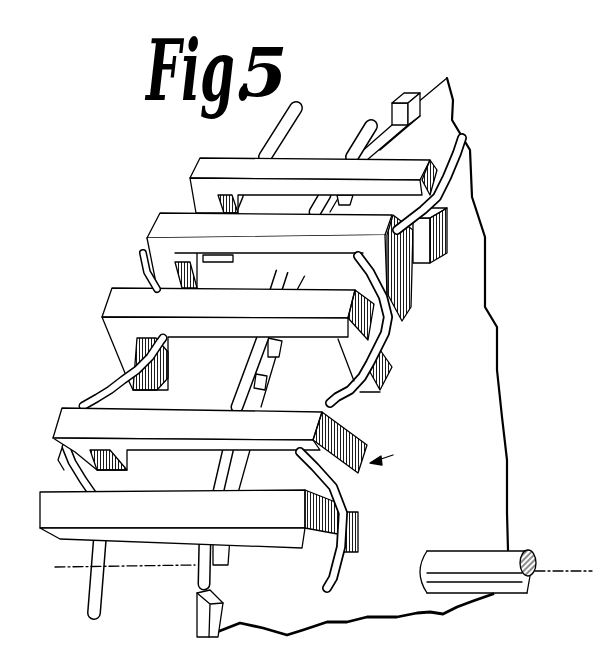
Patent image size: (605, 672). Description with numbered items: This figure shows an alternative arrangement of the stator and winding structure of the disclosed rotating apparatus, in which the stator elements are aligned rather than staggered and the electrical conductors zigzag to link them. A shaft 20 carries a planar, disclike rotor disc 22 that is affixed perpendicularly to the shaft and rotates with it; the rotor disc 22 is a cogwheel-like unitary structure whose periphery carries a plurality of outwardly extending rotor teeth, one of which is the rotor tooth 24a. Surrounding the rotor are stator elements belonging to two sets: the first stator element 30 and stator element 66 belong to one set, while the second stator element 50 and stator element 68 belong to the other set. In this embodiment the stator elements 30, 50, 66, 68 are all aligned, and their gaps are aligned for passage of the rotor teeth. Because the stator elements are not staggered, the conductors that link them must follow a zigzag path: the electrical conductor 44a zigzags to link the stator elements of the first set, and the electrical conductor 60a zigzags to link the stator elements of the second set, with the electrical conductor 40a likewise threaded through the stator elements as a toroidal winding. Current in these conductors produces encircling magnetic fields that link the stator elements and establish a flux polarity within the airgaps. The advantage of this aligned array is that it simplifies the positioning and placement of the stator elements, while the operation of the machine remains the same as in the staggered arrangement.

The shaft 20 is at (527, 552).
The rotor disc 22 is at (474, 478).
The rotor tooth 24a is at (192, 603).
The first stator element 30 is at (36, 512).
The electrical conductor 40a is at (190, 566).
The electrical conductor 44a is at (75, 607).
The second stator element 50 is at (430, 440).
The electrical conductor 60a is at (362, 574).
The stator element 66 is at (90, 304).
The stator element 68 is at (418, 283).